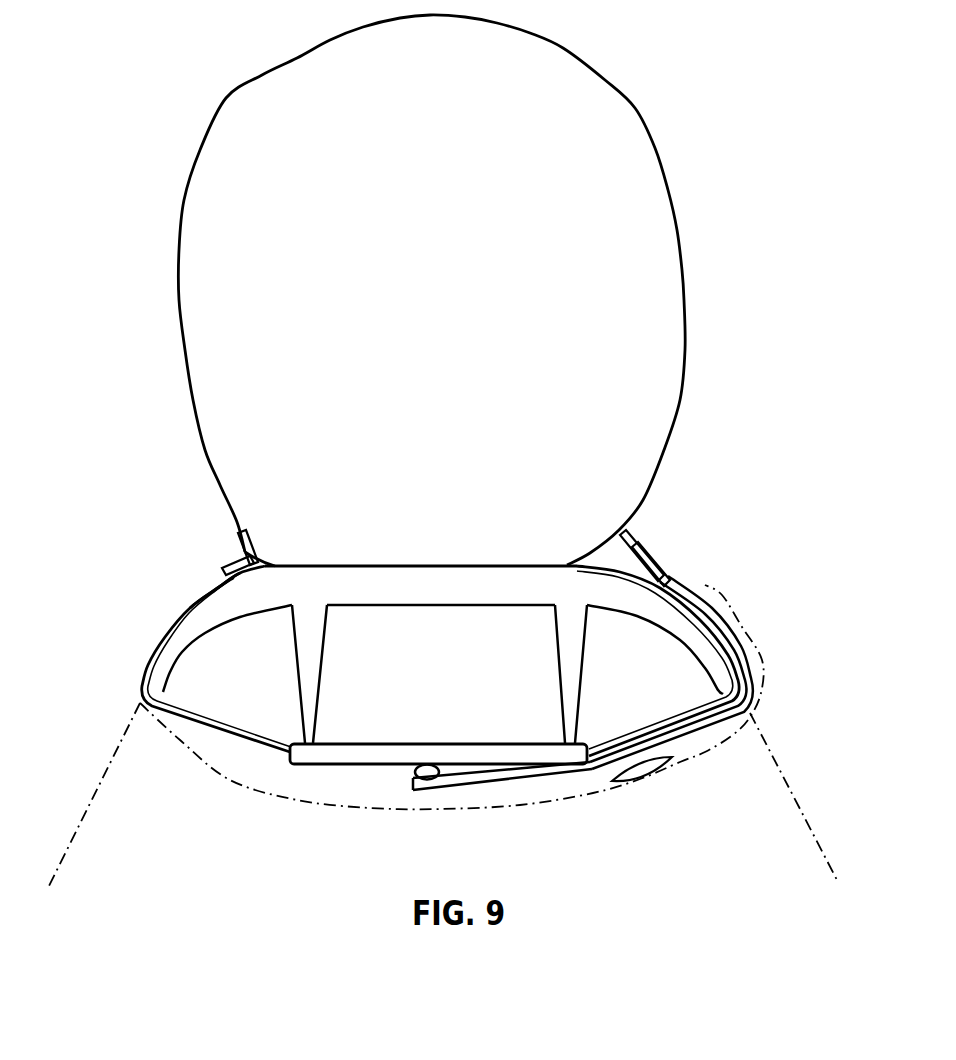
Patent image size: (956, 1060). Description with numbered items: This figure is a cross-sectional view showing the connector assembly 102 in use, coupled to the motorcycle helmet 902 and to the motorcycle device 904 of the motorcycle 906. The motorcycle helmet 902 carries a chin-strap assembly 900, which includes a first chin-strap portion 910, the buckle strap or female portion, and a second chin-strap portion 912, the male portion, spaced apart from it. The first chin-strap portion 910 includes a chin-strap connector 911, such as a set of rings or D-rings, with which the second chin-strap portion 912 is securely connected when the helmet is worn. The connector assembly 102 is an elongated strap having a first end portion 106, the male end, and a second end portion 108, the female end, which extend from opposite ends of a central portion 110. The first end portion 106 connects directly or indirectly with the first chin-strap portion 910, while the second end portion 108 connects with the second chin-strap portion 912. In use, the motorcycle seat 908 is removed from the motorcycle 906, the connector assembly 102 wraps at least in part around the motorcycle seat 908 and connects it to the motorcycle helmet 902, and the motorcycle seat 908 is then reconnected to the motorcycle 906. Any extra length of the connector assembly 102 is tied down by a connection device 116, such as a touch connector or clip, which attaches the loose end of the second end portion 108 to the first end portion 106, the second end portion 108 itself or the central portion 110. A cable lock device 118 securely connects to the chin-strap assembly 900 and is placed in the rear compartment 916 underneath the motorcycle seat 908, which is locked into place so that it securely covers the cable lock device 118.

The chin-strap assembly 900 is at (143, 460).
The connector assembly 102 is at (83, 535).
The motorcycle helmet 902 is at (450, 140).
The motorcycle device 904 is at (468, 583).
The motorcycle seat 908 is at (435, 598).
The first chin-strap portion 910 is at (230, 542).
The chin-strap connector 911 is at (230, 567).
The second chin-strap portion 912 is at (627, 543).
The first end portion 106 is at (215, 600).
The second end portion 108 is at (697, 600).
The motorcycle 906 is at (127, 728).
The central portion 110 is at (363, 742).
The connection device 116 is at (415, 772).
The cable lock device 118 is at (605, 777).
The rear compartment 916 is at (678, 765).